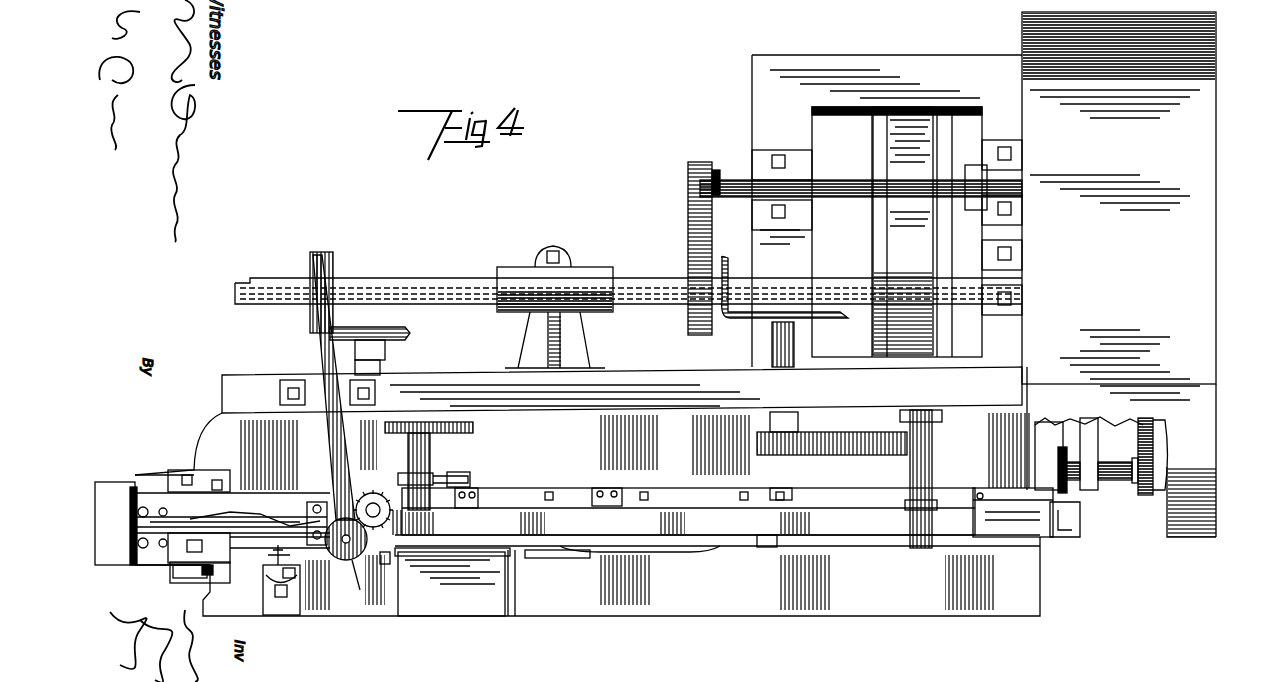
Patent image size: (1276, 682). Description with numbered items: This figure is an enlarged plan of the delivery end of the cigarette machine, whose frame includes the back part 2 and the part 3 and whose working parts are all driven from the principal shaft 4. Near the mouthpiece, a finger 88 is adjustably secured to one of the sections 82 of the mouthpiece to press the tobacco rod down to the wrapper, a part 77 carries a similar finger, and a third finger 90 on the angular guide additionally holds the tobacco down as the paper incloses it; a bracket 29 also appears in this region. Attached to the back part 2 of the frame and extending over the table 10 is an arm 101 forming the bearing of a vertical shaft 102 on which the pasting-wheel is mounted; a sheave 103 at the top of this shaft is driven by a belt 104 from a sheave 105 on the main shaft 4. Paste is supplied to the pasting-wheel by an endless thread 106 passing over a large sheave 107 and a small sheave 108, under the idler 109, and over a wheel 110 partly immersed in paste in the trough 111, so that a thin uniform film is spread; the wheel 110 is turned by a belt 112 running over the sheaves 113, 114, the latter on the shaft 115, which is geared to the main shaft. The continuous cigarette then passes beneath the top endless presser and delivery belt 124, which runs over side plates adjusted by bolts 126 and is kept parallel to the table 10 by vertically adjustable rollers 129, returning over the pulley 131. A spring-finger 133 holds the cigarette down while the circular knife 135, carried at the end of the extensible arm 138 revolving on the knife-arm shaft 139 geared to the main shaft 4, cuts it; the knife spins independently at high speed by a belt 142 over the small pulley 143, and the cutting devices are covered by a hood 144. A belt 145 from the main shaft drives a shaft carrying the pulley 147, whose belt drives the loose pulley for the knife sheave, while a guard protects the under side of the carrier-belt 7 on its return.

The frame 2 is at (622, 390).
The frame 3 is at (587, 514).
The principal shaft 4 is at (468, 286).
The carrier-belt 7 is at (116, 523).
The table 10 is at (135, 566).
The bracket 29 is at (132, 492).
The part 77 is at (197, 522).
The section of mouthpiece 82 is at (175, 560).
The finger 88 is at (197, 516).
The third finger 90 is at (249, 532).
The arm 101 is at (337, 468).
The vertical shaft 102 is at (342, 560).
The sheave 103 is at (355, 590).
The belt 104 is at (345, 350).
The sheave 105 is at (310, 262).
The endless thread 106 is at (530, 560).
The large sheave 107 is at (592, 558).
The small sheave 108 is at (270, 567).
The idler 109 is at (383, 564).
The wheel 110 is at (472, 556).
The trough 111 is at (496, 618).
The belt 112 is at (470, 478).
The sheave 113 is at (462, 476).
The sheave 114 is at (428, 473).
The shaft 115 is at (450, 430).
The top endless presser and delivery belt 124 is at (885, 537).
The bolts 126 is at (668, 488).
The rollers 129 is at (745, 488).
The pulley 131 is at (935, 500).
The spring-finger 133 is at (1027, 507).
The circular knife 135 is at (1073, 430).
The extensible arm 138 is at (1098, 446).
The knife-arm shaft 139 is at (887, 211).
The belt 142 is at (1153, 436).
The small pulley 143 is at (1205, 472).
The hood 144 is at (1119, 274).
The belt 145 is at (903, 231).
The pulley 147 is at (366, 490).